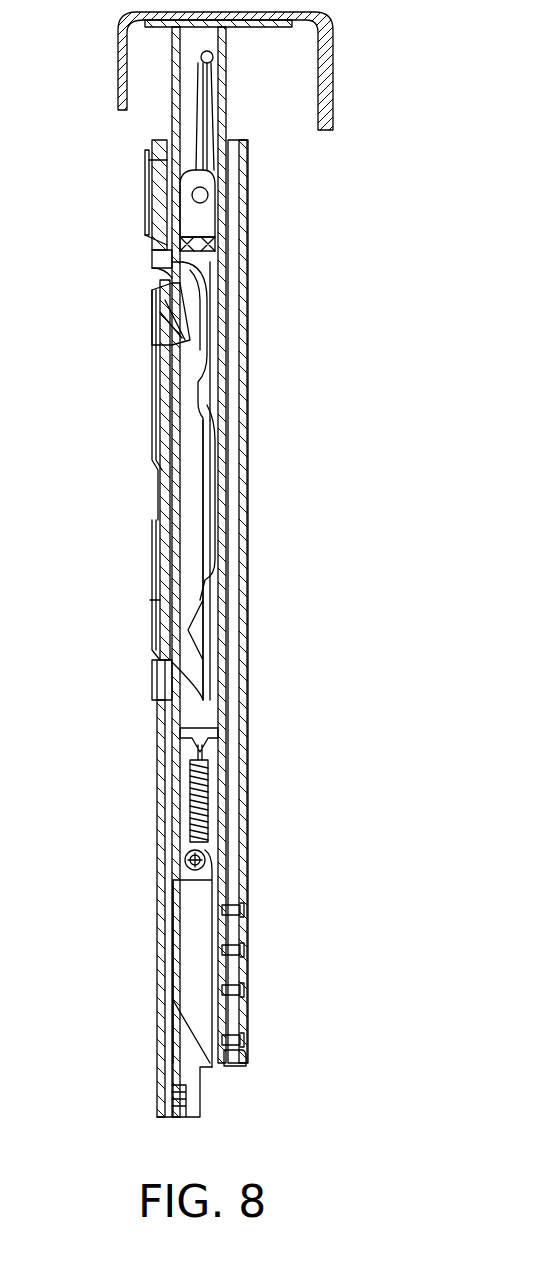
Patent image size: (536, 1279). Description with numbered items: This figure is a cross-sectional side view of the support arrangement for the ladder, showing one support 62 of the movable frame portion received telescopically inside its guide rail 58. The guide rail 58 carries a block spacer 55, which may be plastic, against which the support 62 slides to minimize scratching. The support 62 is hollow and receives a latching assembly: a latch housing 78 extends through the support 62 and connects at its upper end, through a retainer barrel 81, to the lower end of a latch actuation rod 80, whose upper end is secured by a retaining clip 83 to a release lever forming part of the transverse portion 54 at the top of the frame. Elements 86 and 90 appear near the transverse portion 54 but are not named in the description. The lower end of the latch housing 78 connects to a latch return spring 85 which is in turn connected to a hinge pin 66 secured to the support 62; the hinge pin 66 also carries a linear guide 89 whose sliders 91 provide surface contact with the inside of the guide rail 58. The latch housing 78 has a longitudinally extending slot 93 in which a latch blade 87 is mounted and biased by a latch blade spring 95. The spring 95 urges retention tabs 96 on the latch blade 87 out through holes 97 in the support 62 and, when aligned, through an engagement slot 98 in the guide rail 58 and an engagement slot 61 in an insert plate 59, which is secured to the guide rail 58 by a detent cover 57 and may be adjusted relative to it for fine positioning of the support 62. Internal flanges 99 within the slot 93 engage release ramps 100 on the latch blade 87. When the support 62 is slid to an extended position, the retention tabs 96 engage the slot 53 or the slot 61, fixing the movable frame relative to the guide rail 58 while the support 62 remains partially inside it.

The transverse portion 54 is at (334, 78).
The strip 86 is at (164, 27).
The rail 90 is at (176, 56).
The support 62 is at (226, 78).
The guide rail 58 is at (249, 356).
The latch actuation rod 80 is at (200, 122).
The retaining clip 83 is at (213, 58).
The latch housing 78 is at (232, 160).
The retainer barrel 81 is at (209, 195).
The longitudinally extending slot 93 is at (223, 248).
The latch blade 87 is at (225, 302).
The internal flange 99 is at (213, 326).
The latch blade spring 95 is at (222, 406).
The detent cover 57 is at (150, 186).
The engagement slot 61 is at (160, 252).
The retention tab 96 is at (152, 272).
The insert plate 59 is at (152, 300).
The release ramp 100 is at (162, 334).
The block spacer 55 is at (162, 415).
The slot 53 is at (162, 572).
The engagement slot 98 is at (160, 668).
The hole 97 is at (160, 706).
The latch return spring 85 is at (190, 786).
The hinge pin 66 is at (190, 862).
The slider 91 is at (236, 912).
The linear guide 89 is at (236, 1061).